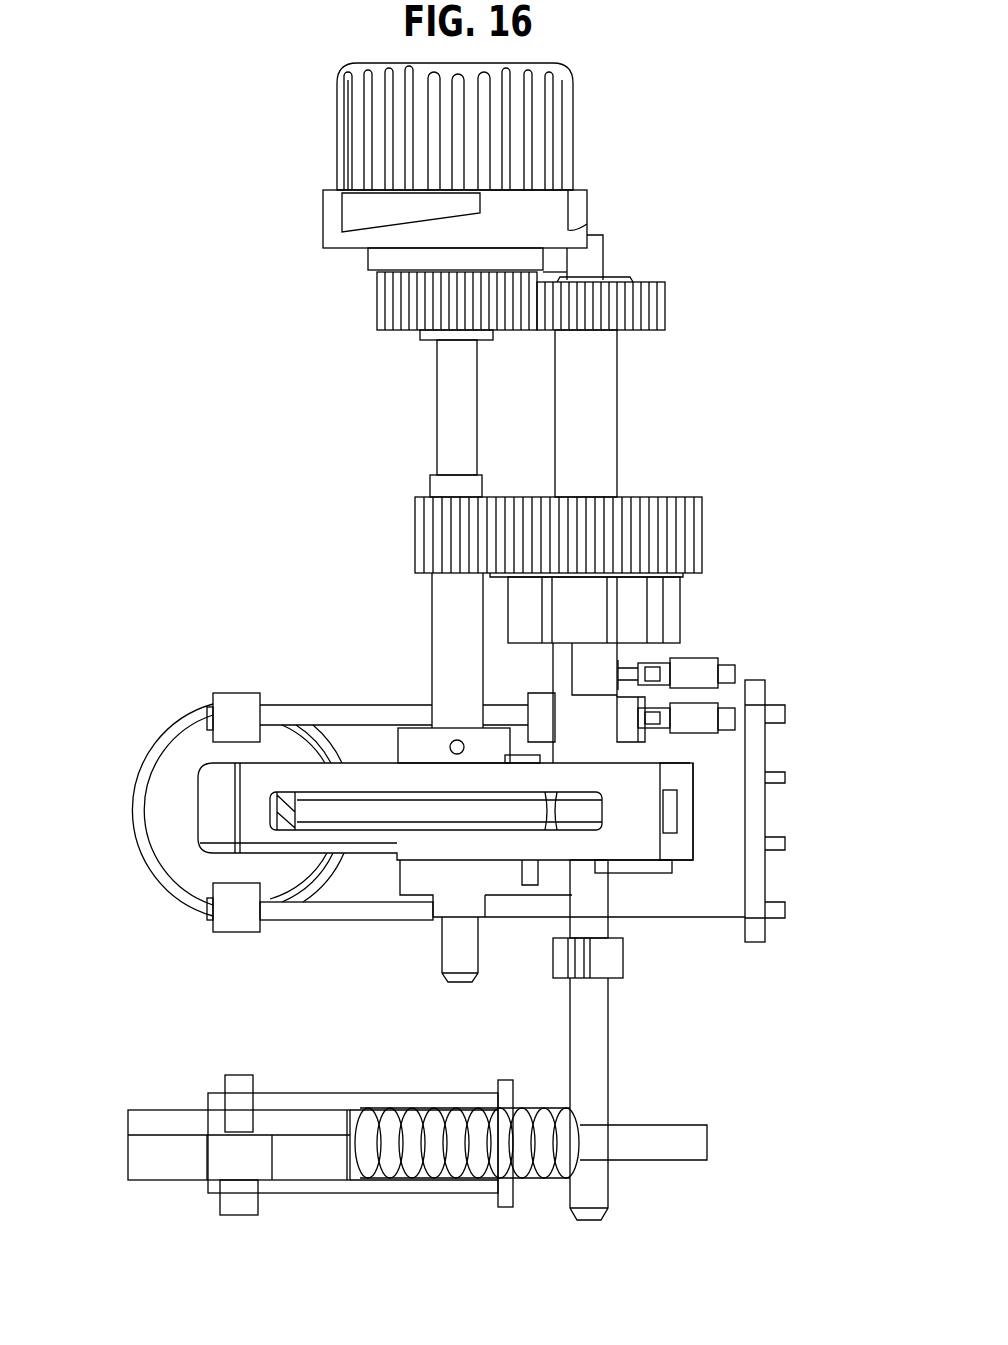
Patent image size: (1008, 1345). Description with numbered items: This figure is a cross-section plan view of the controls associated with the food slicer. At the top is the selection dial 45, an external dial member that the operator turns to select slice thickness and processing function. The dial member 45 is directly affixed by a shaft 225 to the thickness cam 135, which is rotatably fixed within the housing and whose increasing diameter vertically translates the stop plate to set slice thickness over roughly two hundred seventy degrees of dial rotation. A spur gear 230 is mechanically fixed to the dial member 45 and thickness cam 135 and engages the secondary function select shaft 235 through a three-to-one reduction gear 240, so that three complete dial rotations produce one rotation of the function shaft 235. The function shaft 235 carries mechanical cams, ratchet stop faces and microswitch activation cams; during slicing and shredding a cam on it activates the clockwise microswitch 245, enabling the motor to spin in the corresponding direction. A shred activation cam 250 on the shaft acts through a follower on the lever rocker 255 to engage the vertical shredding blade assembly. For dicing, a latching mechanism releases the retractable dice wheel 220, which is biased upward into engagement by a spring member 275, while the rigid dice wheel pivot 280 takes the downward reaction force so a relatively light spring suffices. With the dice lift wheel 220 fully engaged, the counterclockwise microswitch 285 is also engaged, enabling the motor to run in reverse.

The selection dial 45 is at (528, 131).
The reduction gear 240 is at (603, 300).
The shaft 225 is at (456, 408).
The secondary shaft 235 is at (595, 400).
The spur gear 230 is at (441, 536).
The counterclockwise microswitch 285 is at (700, 672).
The thickness cam 135 is at (500, 742).
The clockwise microswitch 245 is at (730, 717).
The lever rocker 255 is at (277, 815).
The shred activation cam 250 is at (645, 870).
The dice wheel pivot 280 is at (238, 1085).
The retractable dice wheel 220 is at (145, 1154).
The spring member 275 is at (583, 1147).